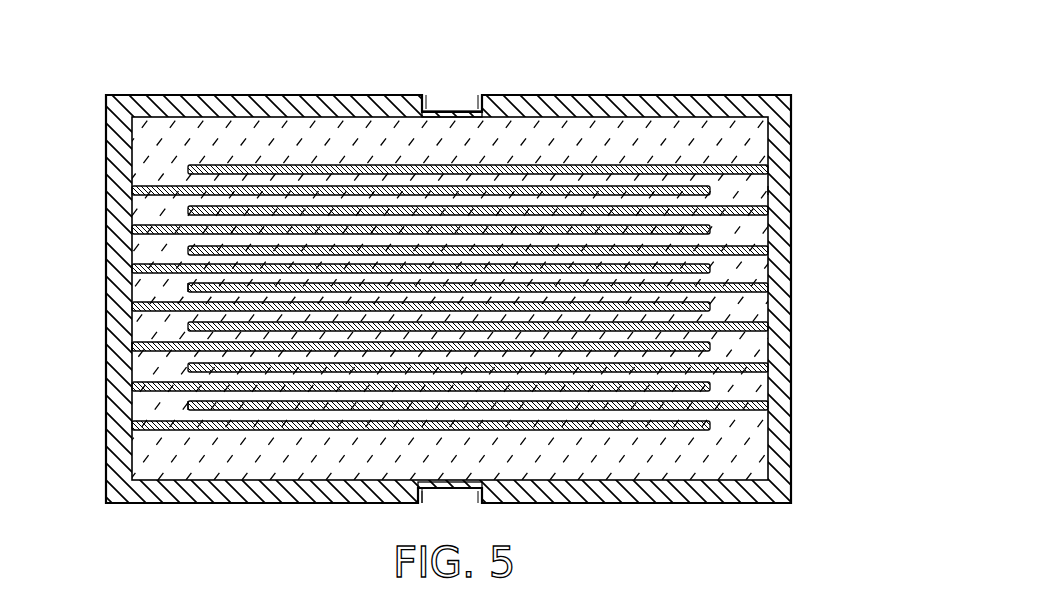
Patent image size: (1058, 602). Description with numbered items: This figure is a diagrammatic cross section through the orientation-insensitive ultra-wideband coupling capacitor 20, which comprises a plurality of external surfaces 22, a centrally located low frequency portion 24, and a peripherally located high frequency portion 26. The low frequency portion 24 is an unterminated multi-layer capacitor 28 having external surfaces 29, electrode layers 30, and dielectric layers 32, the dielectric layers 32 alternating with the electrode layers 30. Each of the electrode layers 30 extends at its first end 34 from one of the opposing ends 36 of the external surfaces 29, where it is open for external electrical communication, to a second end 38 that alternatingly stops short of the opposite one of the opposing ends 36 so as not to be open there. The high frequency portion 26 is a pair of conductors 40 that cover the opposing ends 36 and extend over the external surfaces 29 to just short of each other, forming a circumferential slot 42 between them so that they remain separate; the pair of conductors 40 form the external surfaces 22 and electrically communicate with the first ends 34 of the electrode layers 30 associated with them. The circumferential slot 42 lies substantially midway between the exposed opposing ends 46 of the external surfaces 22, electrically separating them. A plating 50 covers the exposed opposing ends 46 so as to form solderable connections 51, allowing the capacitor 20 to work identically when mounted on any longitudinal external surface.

The orientation-insensitive ultra-wideband coupling capacitor 20 is at (93, 60).
The external surfaces 22 is at (204, 96).
The low frequency portion 24 is at (452, 492).
The high frequency portion 26 is at (137, 518).
The unterminated multi-layer capacitor 28 is at (450, 495).
The external surfaces 29 is at (322, 105).
The electrode layers 30 is at (722, 158).
The dielectric layers 32 is at (140, 212).
The first ends 34 is at (135, 186).
The opposing ends 36 is at (140, 348).
The second ends 38 is at (138, 288).
The pair of conductors 40 is at (478, 93).
The circumferential slot 42 is at (457, 98).
The exposed opposing ends 46 is at (87, 123).
The plating 50 is at (448, 112).
The solderable connections 51 is at (106, 247).